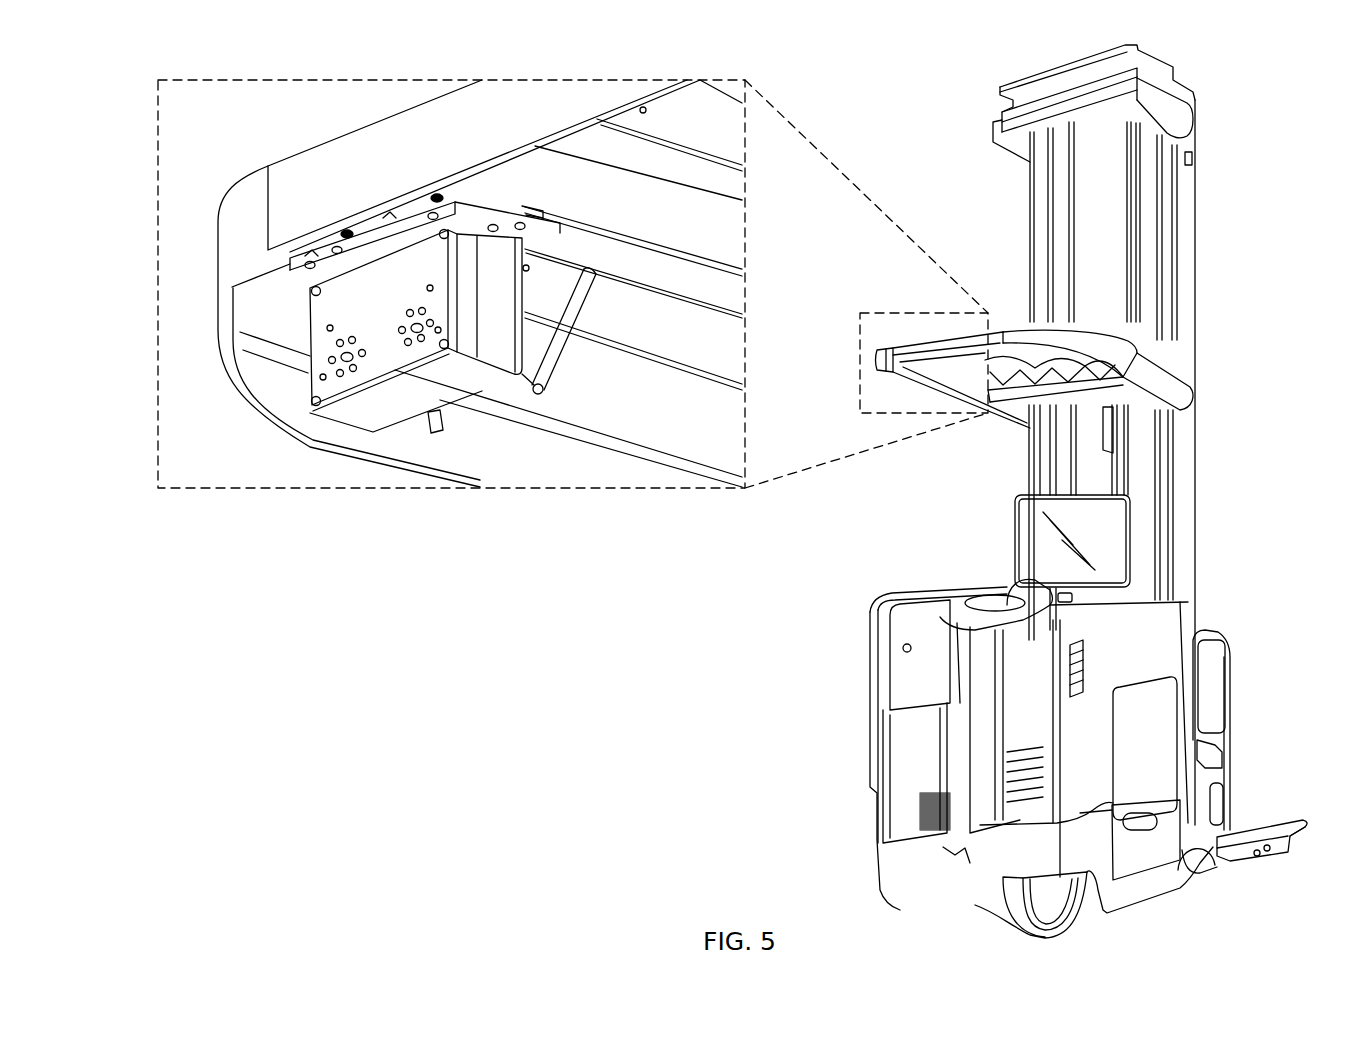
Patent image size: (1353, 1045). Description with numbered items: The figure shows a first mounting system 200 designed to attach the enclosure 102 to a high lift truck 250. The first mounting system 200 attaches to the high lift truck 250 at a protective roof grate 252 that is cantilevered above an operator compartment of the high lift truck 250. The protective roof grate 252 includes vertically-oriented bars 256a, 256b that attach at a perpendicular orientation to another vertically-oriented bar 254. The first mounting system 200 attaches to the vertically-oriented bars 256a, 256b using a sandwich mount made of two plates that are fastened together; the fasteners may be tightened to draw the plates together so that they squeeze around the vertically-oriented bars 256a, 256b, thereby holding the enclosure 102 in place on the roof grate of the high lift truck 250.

The enclosure 102 is at (395, 412).
The first mounting system 200 is at (443, 203).
The high lift truck 250 is at (868, 778).
The protective roof grate 252 is at (1023, 323).
The vertically-oriented bar 254 is at (327, 140).
The vertically-oriented bar 256a is at (670, 325).
The vertically-oriented bar 256b is at (647, 197).